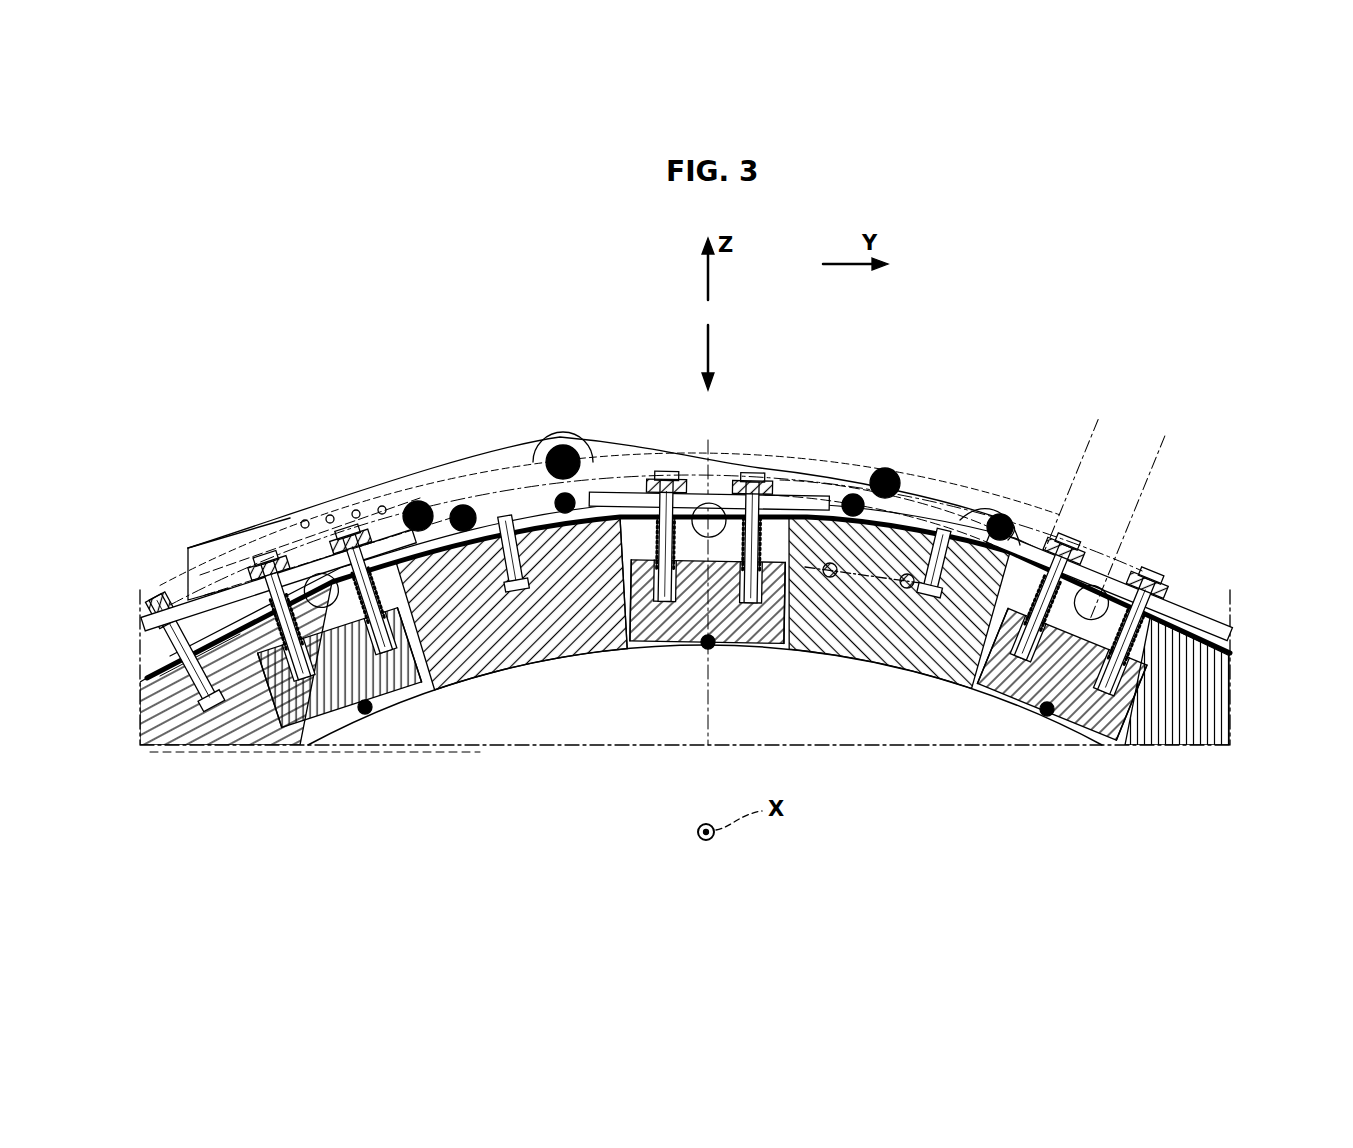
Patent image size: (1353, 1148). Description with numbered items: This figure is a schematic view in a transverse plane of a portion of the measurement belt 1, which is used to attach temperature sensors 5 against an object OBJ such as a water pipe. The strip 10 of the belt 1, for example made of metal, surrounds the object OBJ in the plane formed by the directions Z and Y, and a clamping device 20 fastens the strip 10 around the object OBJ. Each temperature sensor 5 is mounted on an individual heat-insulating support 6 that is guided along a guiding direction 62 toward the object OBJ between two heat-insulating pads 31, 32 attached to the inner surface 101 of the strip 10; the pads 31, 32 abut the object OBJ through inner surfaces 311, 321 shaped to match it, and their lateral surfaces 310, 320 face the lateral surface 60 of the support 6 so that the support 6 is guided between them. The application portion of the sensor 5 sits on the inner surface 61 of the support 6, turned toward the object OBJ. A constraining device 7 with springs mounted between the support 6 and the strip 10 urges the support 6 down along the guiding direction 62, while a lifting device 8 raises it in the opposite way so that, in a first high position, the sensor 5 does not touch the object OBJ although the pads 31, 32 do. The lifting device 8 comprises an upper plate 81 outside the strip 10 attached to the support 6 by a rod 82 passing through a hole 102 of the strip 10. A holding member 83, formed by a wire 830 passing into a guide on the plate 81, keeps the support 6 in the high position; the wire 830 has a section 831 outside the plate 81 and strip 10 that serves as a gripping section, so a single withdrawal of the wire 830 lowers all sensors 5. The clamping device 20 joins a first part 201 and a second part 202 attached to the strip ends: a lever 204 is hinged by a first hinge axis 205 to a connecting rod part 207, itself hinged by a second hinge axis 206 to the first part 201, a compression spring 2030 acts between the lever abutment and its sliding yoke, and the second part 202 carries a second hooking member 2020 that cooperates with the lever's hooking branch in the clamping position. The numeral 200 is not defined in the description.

The measurement belt 1 is at (1024, 322).
The temperature sensor 5 is at (368, 708).
The heat-insulating individual support 6 is at (325, 720).
The constraining device 7 is at (385, 570).
The lifting device 8 is at (240, 570).
The strip 10 is at (180, 650).
The clamping device 20 is at (812, 505).
The heat-insulating pad 31 is at (527, 628).
The heat-insulating pad 32 is at (200, 722).
The lateral surface of the support 60 is at (283, 715).
The inner surface of the support 61 is at (347, 700).
The guiding direction 62 is at (700, 347).
The upper plate 81 is at (300, 590).
The rod 82 is at (290, 605).
The holding member 83 is at (873, 465).
The inner surface of the strip 101 is at (514, 470).
The hole of the strip 102 is at (180, 641).
The shell housing 200 is at (592, 430).
The first mechanical part 201 is at (452, 512).
The second mechanical part 202 is at (1000, 528).
The lever 204 is at (250, 545).
The first hinge axis 205 is at (424, 500).
The second hinge axis 206 is at (555, 452).
The connecting rod part 207 is at (495, 455).
The lateral surface of the pad 310 is at (510, 655).
The inner surface of the pad 311 is at (608, 642).
The lateral surface of the pad 320 is at (253, 650).
The inner surface of the pad 321 is at (883, 632).
The wire 830 is at (213, 622).
The wire section 831 is at (345, 580).
The second hooking member 2020 is at (920, 450).
The compression spring 2030 is at (322, 510).
The object OBJ is at (685, 671).